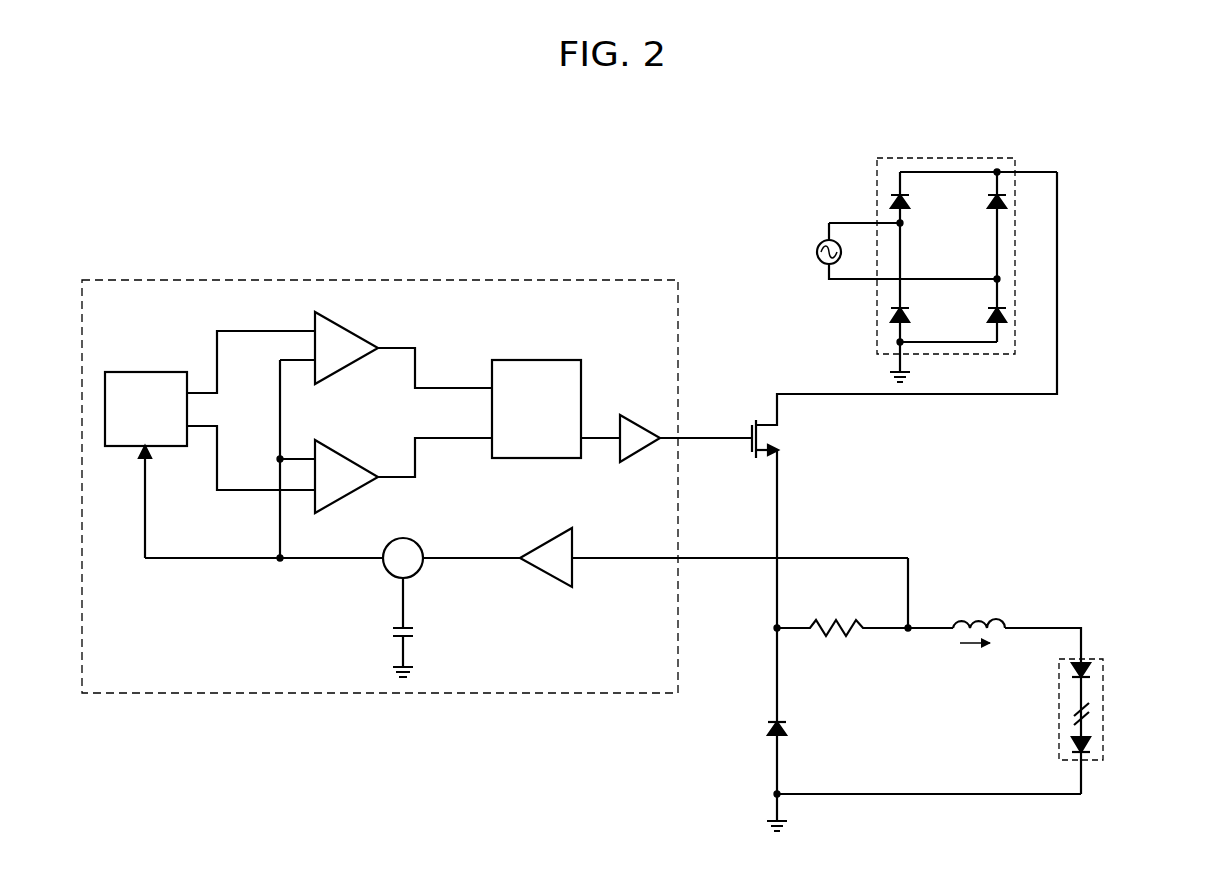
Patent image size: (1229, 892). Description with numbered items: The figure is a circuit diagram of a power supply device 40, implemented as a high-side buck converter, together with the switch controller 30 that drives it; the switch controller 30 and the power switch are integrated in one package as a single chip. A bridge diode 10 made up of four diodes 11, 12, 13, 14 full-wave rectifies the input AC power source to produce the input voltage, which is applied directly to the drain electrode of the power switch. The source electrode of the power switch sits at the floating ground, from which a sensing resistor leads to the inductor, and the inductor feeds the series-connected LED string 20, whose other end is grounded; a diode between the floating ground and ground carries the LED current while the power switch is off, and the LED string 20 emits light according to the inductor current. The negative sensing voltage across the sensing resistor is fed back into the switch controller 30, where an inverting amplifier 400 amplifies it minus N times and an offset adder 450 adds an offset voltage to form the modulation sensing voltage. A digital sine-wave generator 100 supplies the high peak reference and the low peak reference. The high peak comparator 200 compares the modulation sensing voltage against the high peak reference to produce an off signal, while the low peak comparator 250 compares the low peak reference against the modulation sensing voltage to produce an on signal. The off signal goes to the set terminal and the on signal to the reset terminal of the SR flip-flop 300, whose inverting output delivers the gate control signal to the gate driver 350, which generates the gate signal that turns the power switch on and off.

The bridge diode 10 is at (919, 270).
The diode 11 is at (913, 201).
The diode 12 is at (982, 201).
The diode 13 is at (913, 314).
The diode 14 is at (982, 314).
The LED string 20 is at (1103, 731).
The switch controller 30 is at (472, 280).
The power supply device 40 is at (1090, 150).
The digital sine-wave generator 100 is at (105, 393).
The high peak comparator 200 is at (356, 328).
The low peak comparator 250 is at (360, 492).
The SR flip-flop 300 is at (556, 360).
The gate driver 350 is at (640, 415).
The inverting amplifier 400 is at (558, 587).
The offset adder 450 is at (418, 572).